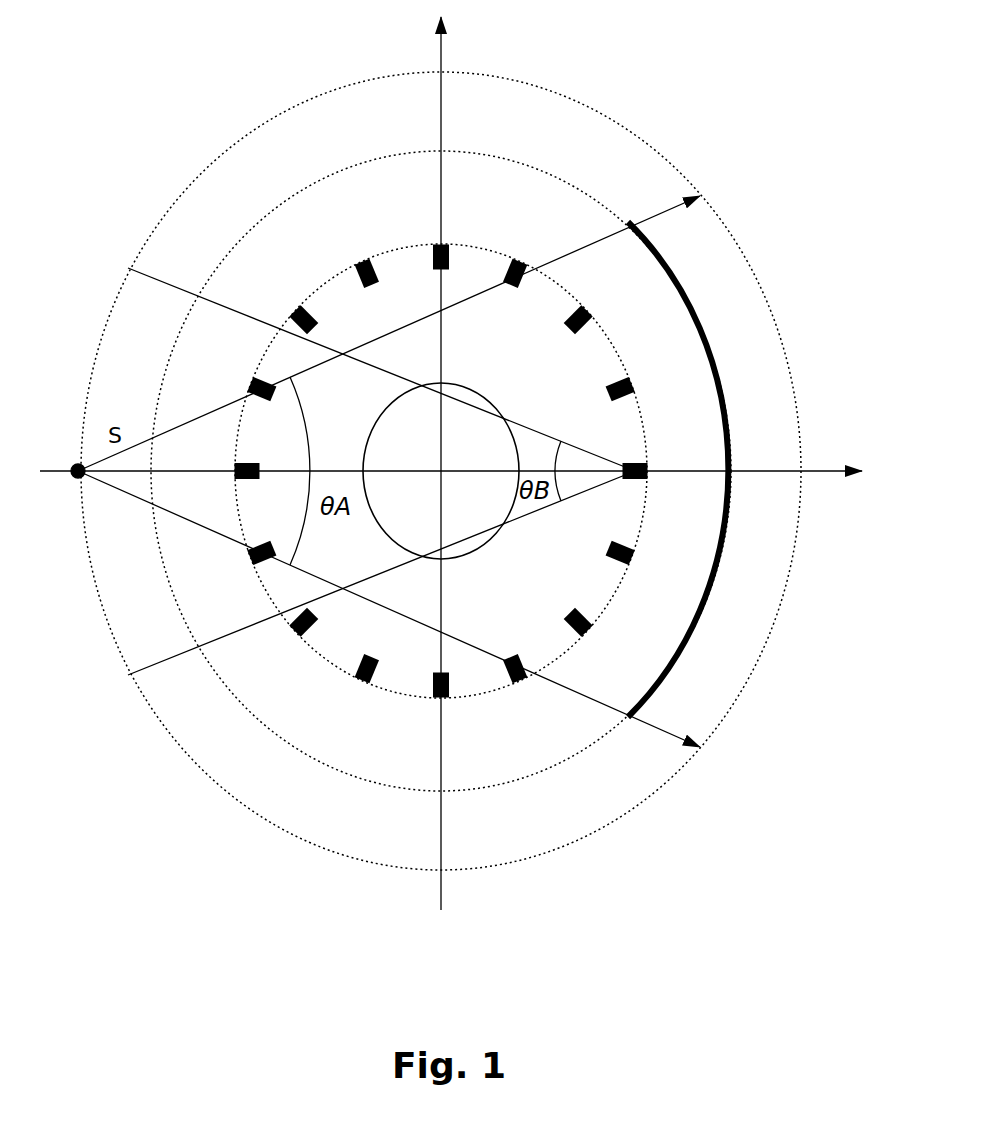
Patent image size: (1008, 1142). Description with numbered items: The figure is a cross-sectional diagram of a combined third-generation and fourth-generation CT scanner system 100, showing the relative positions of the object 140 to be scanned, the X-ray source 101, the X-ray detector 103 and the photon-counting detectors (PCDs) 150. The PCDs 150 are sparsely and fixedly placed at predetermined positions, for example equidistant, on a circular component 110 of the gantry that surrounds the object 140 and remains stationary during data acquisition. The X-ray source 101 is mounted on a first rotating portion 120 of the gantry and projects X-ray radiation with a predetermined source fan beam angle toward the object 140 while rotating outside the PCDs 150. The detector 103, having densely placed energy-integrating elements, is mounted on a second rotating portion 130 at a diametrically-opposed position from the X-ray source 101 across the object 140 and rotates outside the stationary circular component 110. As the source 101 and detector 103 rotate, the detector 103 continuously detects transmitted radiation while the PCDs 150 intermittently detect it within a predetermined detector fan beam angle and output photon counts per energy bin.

The CT scanner system 100 is at (147, 42).
The X-ray source 101 is at (75, 482).
The X-ray detector 103 is at (675, 272).
The circular component 110 is at (547, 266).
The first rotating portion 120 is at (694, 773).
The second rotating portion 130 is at (578, 178).
The object 140 is at (481, 557).
The photon-counting detectors (PCDs) 150 is at (367, 258).